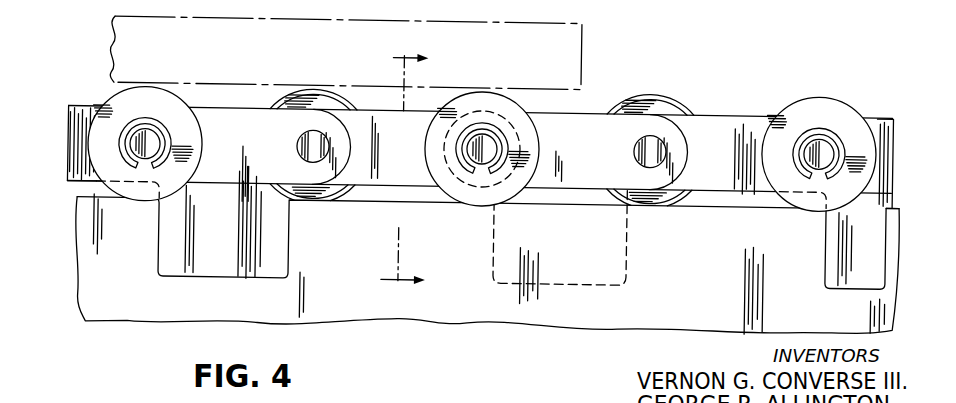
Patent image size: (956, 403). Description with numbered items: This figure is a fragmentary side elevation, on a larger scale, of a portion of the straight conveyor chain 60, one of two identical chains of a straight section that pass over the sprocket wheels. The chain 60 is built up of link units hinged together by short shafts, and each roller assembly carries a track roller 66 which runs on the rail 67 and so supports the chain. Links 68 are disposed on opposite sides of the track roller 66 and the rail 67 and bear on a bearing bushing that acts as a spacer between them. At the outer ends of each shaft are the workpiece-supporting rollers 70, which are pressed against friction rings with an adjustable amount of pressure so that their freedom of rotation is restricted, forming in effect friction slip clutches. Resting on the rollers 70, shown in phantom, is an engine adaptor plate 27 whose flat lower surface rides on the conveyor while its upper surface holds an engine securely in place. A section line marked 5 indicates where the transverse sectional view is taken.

The section line 5- 5 is at (399, 172).
The engine adaptor plate 27 is at (578, 40).
The chain 60 is at (745, 125).
The track roller 66 is at (325, 203).
The rail 67 is at (452, 308).
The links 68 is at (291, 253).
The workpiece-supporting roller 70 is at (838, 95).